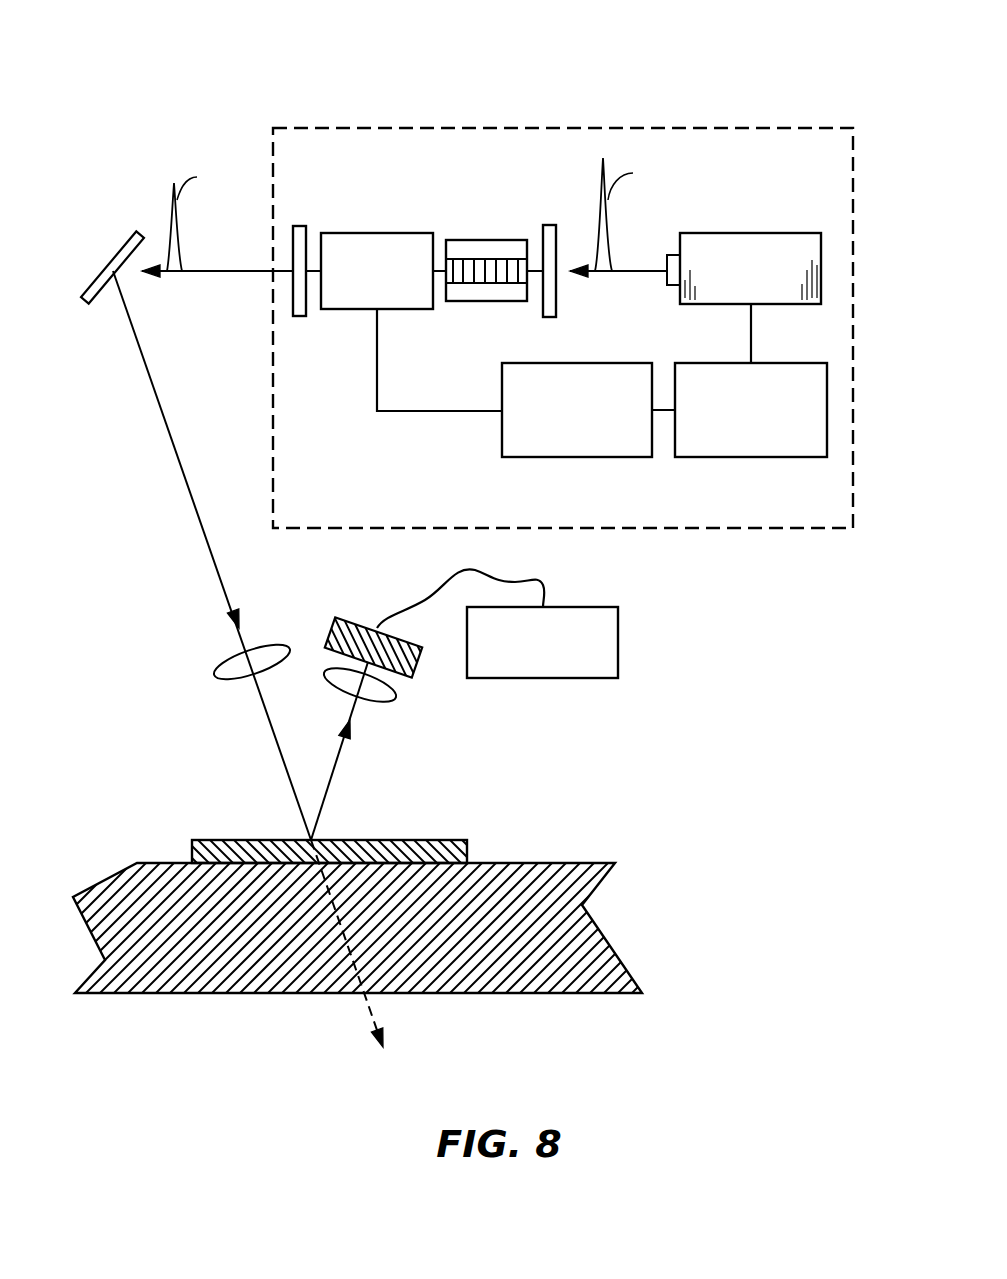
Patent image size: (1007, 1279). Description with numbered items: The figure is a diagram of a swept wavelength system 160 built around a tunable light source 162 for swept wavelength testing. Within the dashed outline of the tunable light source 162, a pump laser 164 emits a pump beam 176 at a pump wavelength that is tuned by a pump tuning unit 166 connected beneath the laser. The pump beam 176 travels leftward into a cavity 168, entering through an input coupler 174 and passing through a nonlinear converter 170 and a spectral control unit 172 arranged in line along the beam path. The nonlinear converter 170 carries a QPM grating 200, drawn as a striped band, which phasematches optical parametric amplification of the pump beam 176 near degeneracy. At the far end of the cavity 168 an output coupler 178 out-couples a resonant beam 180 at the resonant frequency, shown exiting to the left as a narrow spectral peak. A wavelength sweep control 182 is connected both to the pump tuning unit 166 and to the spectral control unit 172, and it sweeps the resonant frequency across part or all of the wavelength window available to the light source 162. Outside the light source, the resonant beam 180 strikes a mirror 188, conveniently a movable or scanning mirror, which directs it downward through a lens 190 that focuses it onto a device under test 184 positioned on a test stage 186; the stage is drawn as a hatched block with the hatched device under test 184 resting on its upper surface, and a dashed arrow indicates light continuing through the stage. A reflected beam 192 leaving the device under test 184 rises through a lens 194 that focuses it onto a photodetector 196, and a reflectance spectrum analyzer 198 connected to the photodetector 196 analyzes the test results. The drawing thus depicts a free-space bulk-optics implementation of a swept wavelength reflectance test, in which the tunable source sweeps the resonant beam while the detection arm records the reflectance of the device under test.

The swept wavelength system 160 is at (296, 59).
The tunable light source 162 is at (520, 128).
The pump laser 164 is at (723, 233).
The pump tuning unit 166 is at (697, 363).
The cavity 168 is at (326, 196).
The nonlinear converter 170 is at (477, 240).
The spectral control unit 172 is at (393, 233).
The input coupler 174 is at (549, 225).
The pump beam 176 is at (635, 270).
The output coupler 178 is at (300, 316).
The resonant beam 180 is at (207, 272).
The wavelength sweep control 182 is at (502, 443).
The device under test 184 is at (467, 850).
The test stage 186 is at (103, 880).
The mirror 188 is at (115, 242).
The lens 190 is at (213, 673).
The reflected beam 192 is at (334, 778).
The lens 194 is at (397, 693).
The photodetector 196 is at (370, 622).
The reflectance spectrum analyzer 198 is at (502, 678).
The QPM grating 200 is at (483, 283).